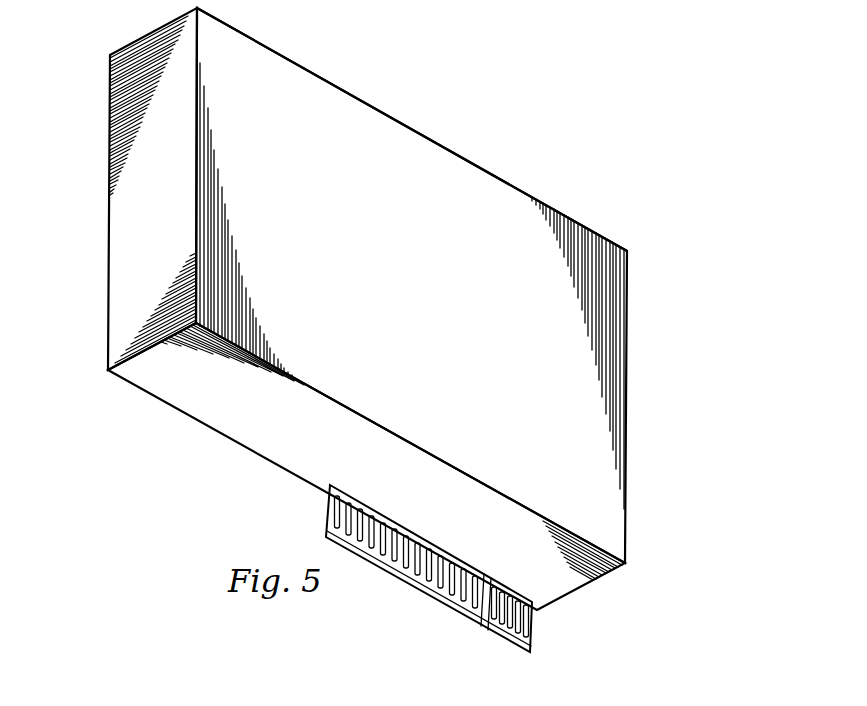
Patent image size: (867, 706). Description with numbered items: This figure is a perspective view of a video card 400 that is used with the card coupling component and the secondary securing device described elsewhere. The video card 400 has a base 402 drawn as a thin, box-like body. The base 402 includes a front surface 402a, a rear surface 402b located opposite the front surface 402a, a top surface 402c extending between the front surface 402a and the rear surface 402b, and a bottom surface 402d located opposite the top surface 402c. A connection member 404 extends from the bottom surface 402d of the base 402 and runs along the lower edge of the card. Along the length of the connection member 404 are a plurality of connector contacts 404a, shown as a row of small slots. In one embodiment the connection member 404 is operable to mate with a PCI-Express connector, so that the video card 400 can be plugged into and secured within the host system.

The video card 400 is at (690, 335).
The base 402 is at (372, 309).
The front surface 402a is at (627, 405).
The rear surface 402b is at (125, 232).
The top surface 402c is at (293, 61).
The bottom surface 402d is at (245, 438).
The connection member 404 is at (472, 562).
The connector contacts 404a is at (377, 527).